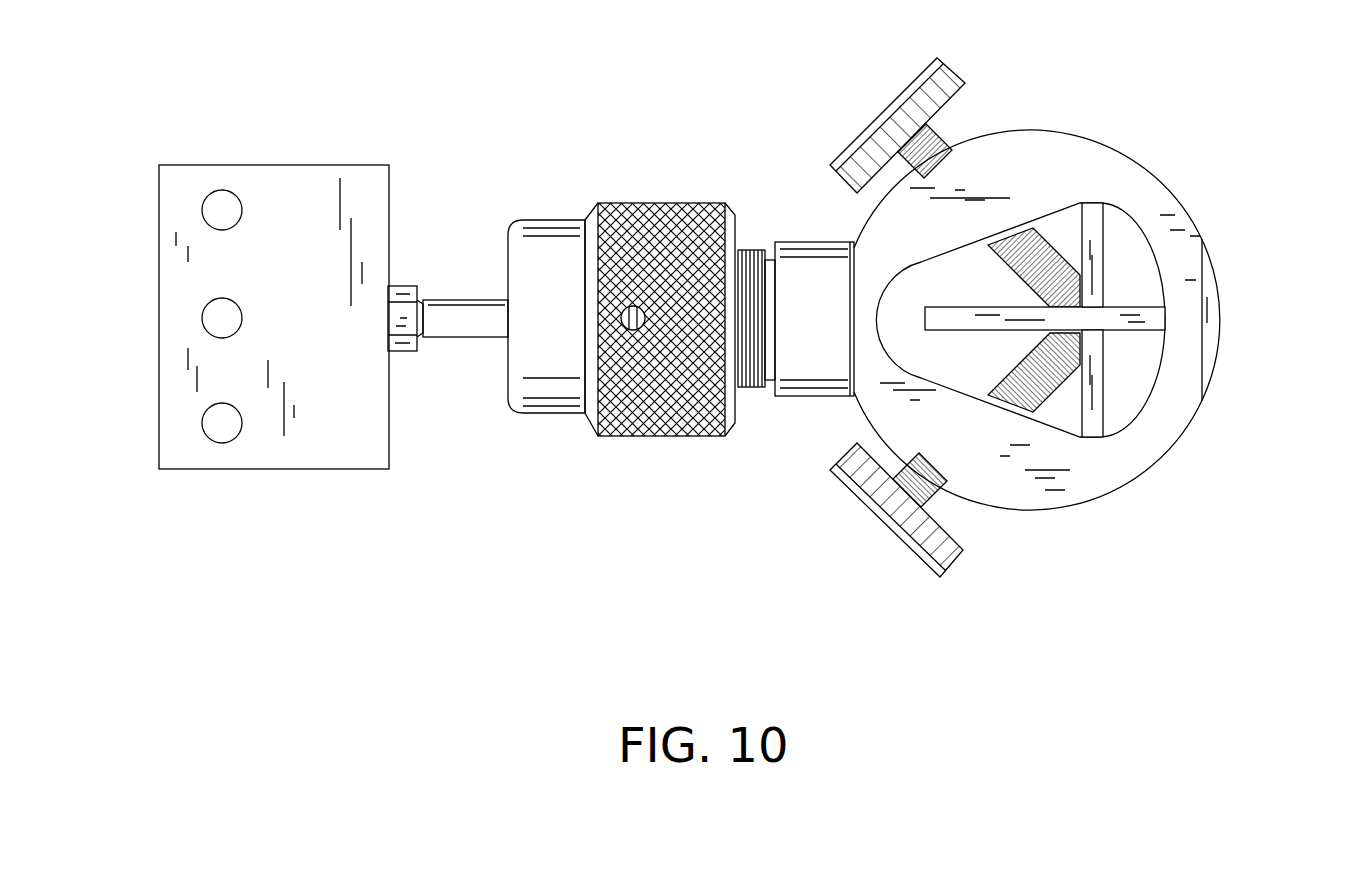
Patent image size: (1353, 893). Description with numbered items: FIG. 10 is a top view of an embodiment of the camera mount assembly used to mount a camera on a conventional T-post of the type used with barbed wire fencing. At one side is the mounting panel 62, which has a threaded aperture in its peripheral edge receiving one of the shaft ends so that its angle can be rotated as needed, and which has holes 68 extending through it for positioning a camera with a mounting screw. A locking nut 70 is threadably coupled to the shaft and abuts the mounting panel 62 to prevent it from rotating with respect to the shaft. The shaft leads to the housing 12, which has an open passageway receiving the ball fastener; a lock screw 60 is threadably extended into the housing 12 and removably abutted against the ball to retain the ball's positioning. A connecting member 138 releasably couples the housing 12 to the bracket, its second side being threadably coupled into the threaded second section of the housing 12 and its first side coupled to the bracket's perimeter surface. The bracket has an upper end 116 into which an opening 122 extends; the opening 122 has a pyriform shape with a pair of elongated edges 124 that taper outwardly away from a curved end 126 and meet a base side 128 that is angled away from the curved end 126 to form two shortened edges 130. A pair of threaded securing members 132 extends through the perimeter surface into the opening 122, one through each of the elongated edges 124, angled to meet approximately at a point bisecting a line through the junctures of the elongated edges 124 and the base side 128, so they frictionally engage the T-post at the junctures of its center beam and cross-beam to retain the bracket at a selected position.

The housing 12 is at (595, 437).
The lock screw 60 is at (634, 308).
The mounting panel 62 is at (160, 469).
The hole 68 is at (222, 190).
The locking nut 70 is at (405, 352).
The upper end 116 is at (1137, 453).
The opening 122 is at (1123, 281).
The elongated edges 124 is at (955, 255).
The curved end 126 is at (857, 392).
The base side 128 is at (1165, 322).
The shortened edges 130 is at (1162, 292).
The securing members 132 is at (962, 552).
The connecting member 138 is at (785, 242).